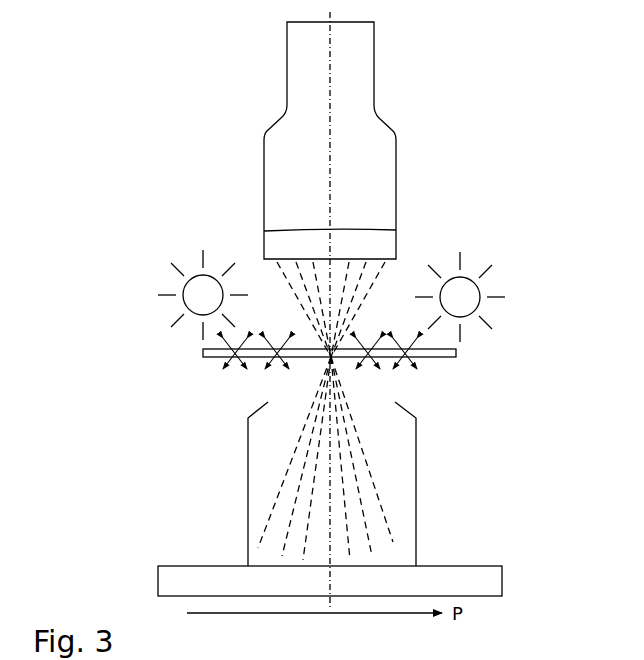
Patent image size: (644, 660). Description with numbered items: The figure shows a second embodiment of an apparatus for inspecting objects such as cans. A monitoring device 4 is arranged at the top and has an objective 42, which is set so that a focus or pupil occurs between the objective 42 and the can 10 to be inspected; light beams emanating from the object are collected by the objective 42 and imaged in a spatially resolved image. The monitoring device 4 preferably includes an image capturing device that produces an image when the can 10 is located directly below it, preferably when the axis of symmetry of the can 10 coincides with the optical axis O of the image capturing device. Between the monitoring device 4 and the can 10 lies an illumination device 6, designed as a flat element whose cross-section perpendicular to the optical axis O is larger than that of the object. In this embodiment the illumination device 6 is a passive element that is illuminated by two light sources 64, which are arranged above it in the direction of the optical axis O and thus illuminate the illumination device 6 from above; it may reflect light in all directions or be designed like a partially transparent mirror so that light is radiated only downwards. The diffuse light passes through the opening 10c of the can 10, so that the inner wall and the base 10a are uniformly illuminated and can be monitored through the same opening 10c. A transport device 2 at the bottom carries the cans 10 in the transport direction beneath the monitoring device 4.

The monitoring device 4 is at (412, 125).
The objective 42 is at (396, 230).
The optical axis O is at (264, 231).
The light sources 64 is at (185, 303).
The illumination device 6 is at (262, 368).
The opening 10c is at (375, 398).
The can 10 is at (416, 515).
The base 10a is at (363, 565).
The transport device 2 is at (430, 590).